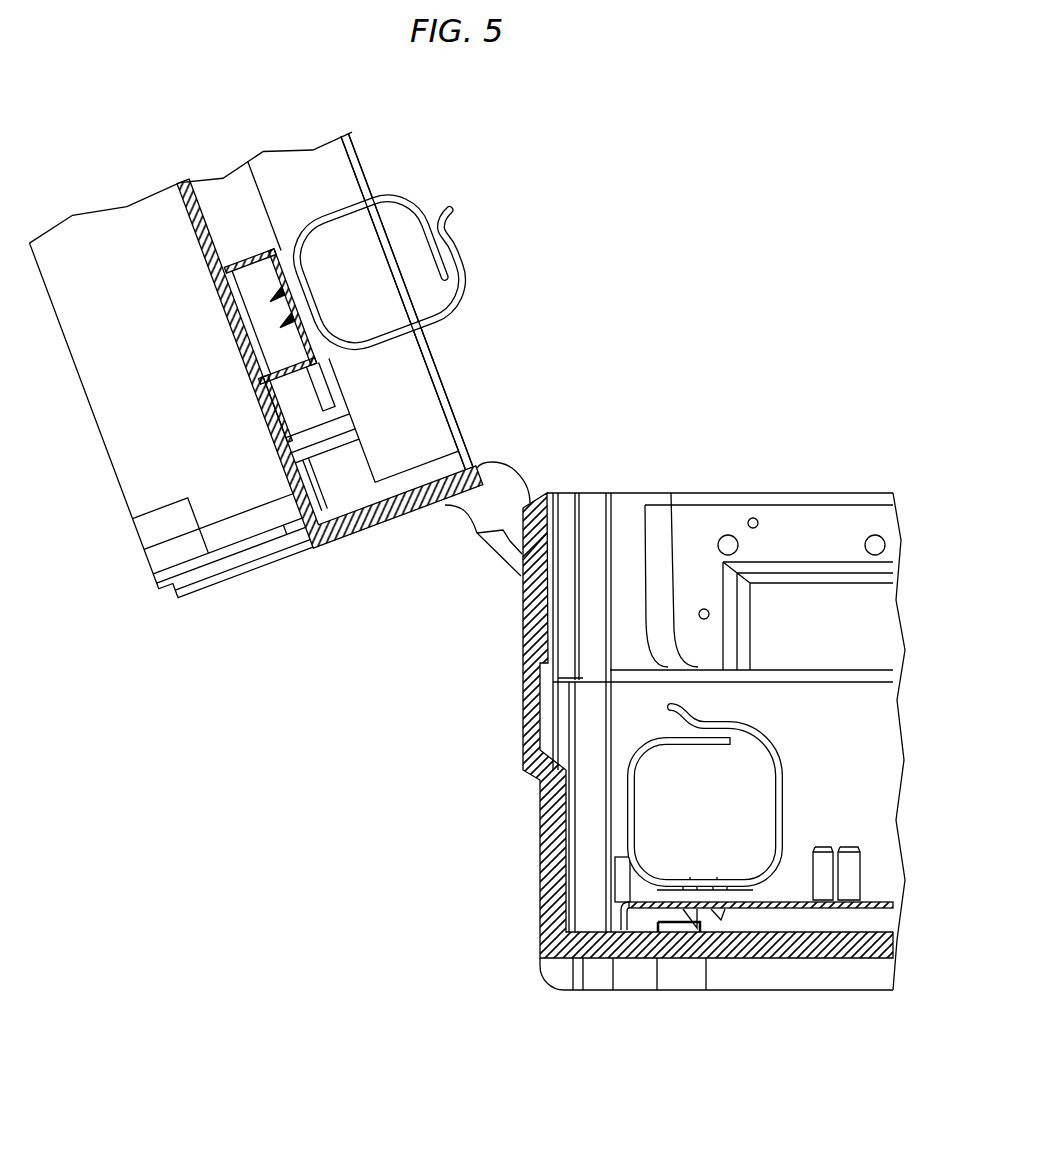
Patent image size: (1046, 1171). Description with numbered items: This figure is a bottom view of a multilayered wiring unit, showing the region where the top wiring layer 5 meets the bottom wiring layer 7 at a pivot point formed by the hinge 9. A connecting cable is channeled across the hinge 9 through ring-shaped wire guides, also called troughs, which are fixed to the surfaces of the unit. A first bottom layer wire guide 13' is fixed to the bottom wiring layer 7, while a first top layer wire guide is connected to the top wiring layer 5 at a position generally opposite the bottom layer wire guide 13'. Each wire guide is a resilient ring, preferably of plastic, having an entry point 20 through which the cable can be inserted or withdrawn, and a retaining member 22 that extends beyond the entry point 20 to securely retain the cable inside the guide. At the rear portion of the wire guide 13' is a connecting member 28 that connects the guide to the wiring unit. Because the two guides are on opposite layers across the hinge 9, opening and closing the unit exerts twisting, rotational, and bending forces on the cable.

The top wiring layer 5 is at (322, 548).
The bottom wiring layer 7 is at (670, 990).
The hinge 9 is at (510, 465).
The first bottom layer wire guide 13' is at (752, 810).
The entry point 20 is at (672, 730).
The retaining member 22 is at (690, 716).
The connecting member 28 is at (723, 915).